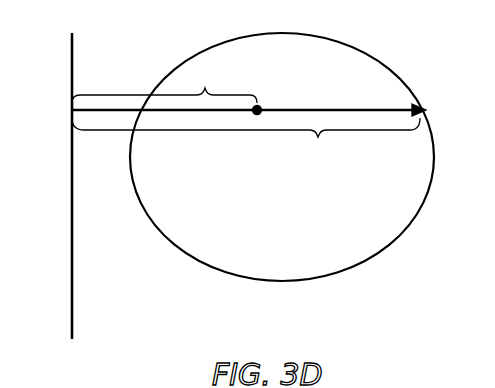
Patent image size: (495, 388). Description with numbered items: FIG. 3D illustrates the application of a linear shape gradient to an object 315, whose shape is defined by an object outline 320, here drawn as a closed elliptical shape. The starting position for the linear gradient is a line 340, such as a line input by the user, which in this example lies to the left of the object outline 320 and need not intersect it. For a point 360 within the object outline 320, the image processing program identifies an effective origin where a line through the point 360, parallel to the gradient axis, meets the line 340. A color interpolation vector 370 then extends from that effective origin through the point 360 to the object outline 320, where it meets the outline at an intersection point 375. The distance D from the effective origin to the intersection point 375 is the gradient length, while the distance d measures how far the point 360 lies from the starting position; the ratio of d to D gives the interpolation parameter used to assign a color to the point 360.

The object 315 is at (414, 281).
The object outline 320 is at (200, 263).
The line 340 is at (70, 262).
The point 360 is at (259, 107).
The color interpolation vector 370 is at (222, 113).
The intersection point 375 is at (428, 110).